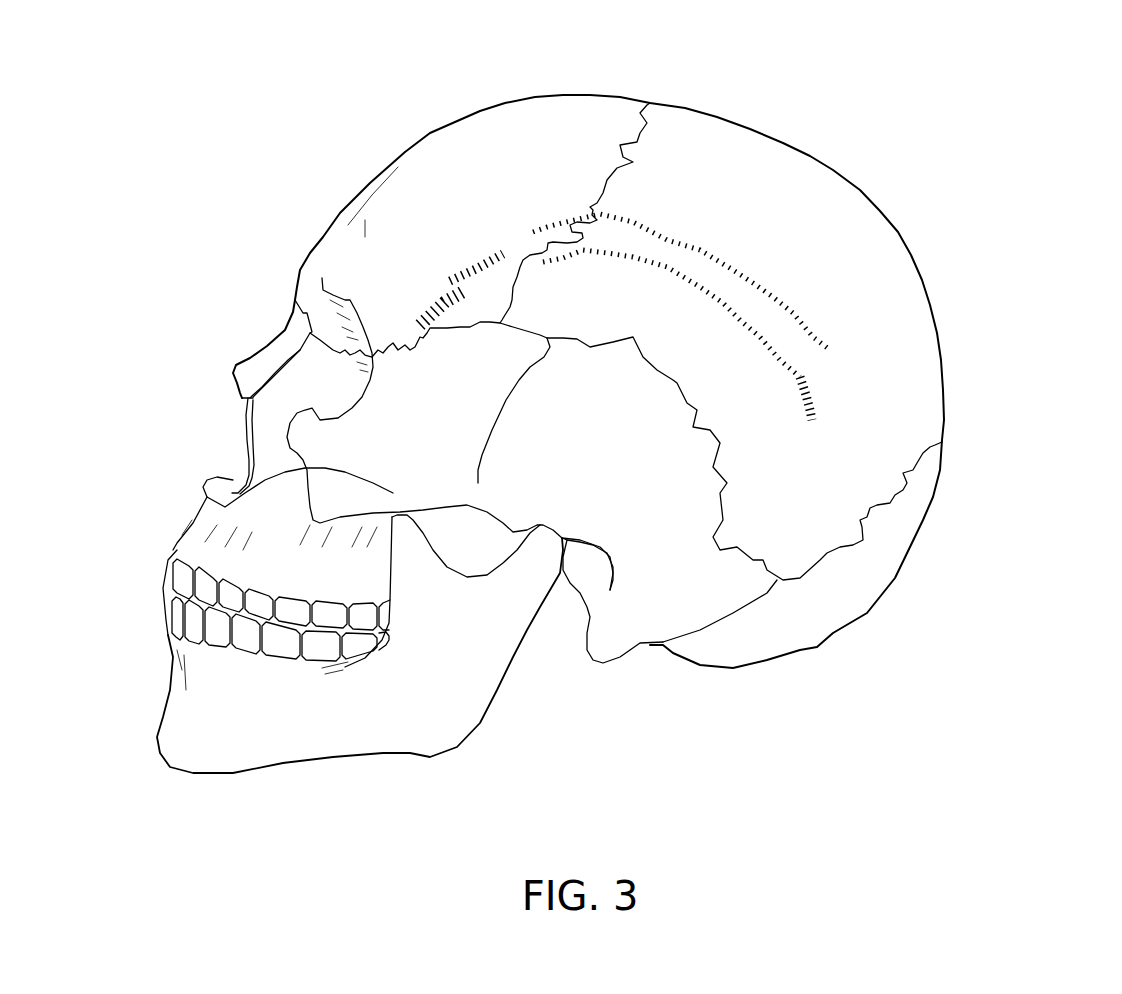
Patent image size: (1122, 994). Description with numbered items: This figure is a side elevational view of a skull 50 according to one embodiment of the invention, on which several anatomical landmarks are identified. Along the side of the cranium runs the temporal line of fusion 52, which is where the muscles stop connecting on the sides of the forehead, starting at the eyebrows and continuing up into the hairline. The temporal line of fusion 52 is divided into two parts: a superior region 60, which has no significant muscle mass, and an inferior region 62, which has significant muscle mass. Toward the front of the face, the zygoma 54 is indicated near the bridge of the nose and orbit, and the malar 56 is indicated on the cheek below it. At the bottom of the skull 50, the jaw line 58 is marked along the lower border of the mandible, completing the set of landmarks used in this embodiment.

The skull 50 is at (631, 351).
The temporal line of fusion 52 is at (520, 198).
The zygoma 54 is at (224, 388).
The malar 56 is at (258, 502).
The jaw line 58 is at (360, 698).
The superior region 60 is at (714, 282).
The inferior region 62 is at (797, 335).